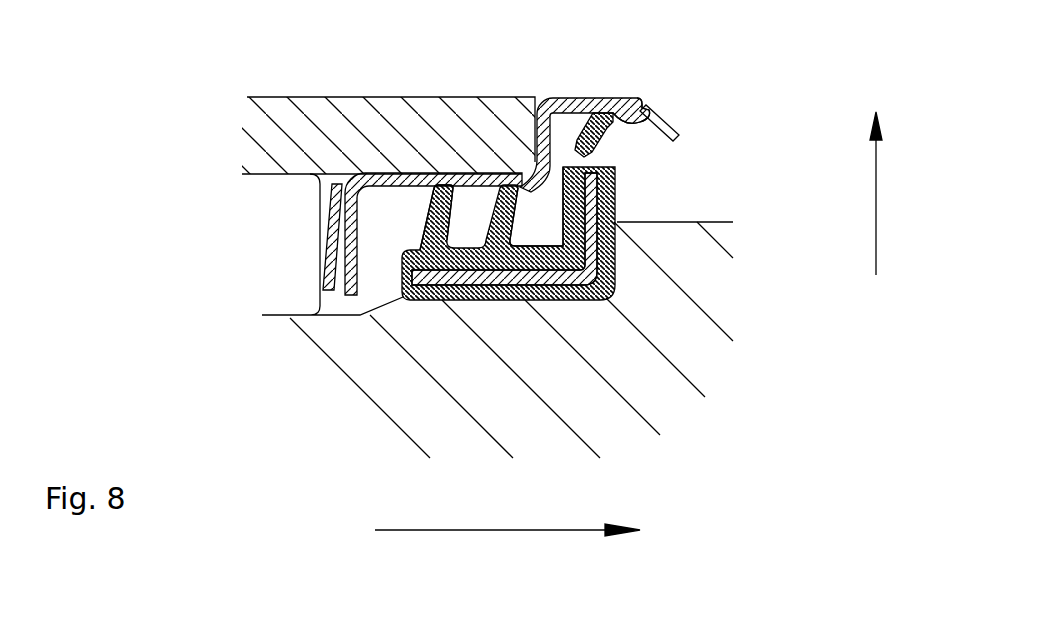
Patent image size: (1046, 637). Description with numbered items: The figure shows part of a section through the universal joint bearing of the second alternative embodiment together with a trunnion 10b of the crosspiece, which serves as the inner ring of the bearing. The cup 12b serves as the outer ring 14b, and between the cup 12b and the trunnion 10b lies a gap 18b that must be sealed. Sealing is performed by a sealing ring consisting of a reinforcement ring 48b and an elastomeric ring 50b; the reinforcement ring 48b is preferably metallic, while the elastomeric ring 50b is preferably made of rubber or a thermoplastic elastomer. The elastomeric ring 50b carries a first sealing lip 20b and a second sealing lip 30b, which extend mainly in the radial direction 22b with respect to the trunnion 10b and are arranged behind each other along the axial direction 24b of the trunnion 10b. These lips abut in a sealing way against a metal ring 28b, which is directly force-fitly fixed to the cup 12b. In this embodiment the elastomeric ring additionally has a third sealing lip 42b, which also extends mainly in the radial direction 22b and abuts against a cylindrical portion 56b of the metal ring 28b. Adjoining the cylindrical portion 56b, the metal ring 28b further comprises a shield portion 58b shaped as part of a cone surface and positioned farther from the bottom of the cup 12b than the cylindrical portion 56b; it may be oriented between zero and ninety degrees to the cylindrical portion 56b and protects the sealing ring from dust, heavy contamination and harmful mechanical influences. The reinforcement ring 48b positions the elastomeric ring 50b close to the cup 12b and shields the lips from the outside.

The trunnion 10b is at (612, 412).
The cup 12b is at (301, 130).
The outer ring 14b is at (262, 126).
The gap 18b is at (557, 240).
The first sealing lip 20b is at (518, 176).
The radial direction 22b is at (875, 213).
The axial direction 24b is at (507, 513).
The metal ring 28b is at (338, 212).
The second sealing lip 30b is at (357, 151).
The third sealing lip 42b is at (590, 100).
The reinforcement ring 48b is at (596, 204).
The elastomeric ring 50b is at (650, 108).
The cylindrical portion 56b is at (611, 100).
The shield portion 58b is at (678, 126).